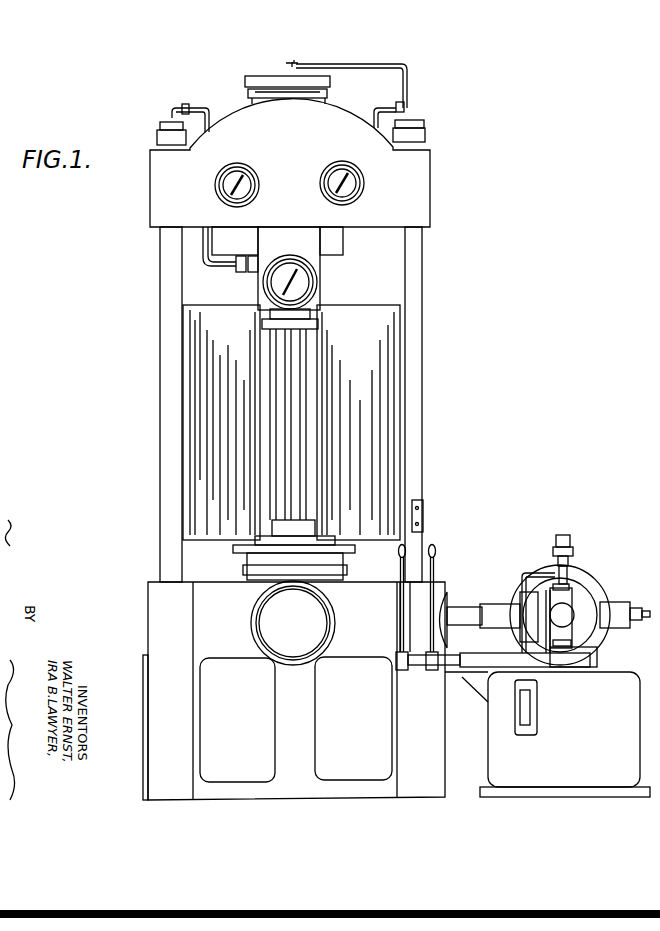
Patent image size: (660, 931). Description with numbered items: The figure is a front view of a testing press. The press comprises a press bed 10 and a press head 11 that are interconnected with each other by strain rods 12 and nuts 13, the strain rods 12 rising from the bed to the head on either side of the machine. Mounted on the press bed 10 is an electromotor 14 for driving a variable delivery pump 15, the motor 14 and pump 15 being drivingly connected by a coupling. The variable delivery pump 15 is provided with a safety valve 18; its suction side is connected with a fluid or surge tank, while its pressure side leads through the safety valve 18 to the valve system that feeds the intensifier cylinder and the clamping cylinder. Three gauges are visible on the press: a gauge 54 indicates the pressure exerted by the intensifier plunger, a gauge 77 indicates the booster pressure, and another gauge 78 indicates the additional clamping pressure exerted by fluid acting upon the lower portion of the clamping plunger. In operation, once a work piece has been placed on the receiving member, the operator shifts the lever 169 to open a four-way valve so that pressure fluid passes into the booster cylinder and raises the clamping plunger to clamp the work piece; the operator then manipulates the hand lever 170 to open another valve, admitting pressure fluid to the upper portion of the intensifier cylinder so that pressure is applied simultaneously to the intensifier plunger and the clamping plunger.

The press bed 10 is at (150, 628).
The press head 11 is at (415, 190).
The strain rods 12 is at (160, 326).
The nuts 13 is at (158, 126).
The electromotor 14 is at (600, 592).
The variable delivery pump 15 is at (575, 588).
The safety valve 18 is at (571, 547).
The gauge 54 is at (318, 288).
The gauge 77 is at (240, 152).
The gauge 78 is at (338, 161).
The lever 169 is at (400, 566).
The hand lever 170 is at (434, 566).